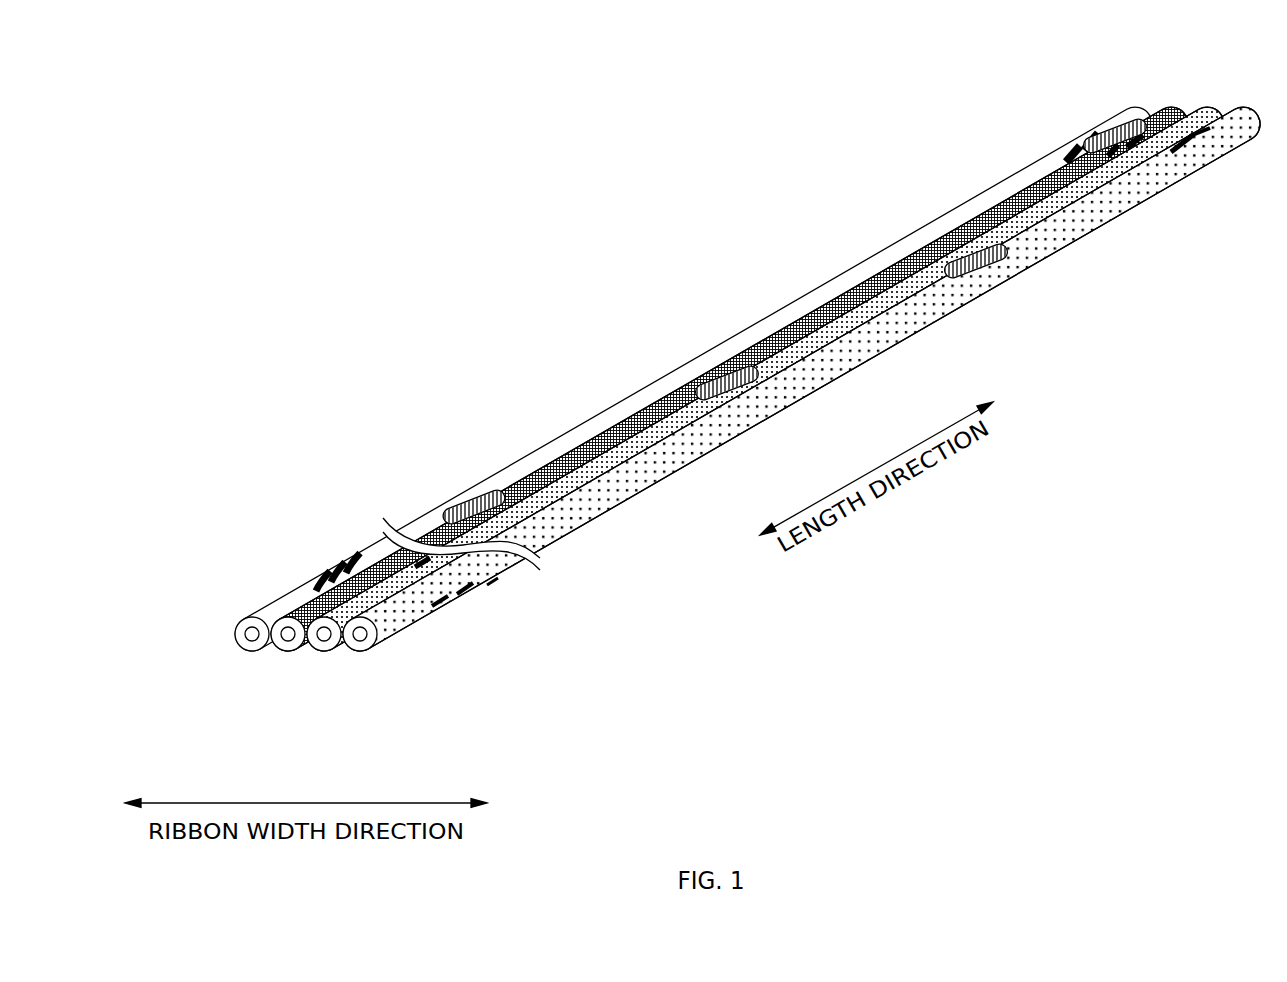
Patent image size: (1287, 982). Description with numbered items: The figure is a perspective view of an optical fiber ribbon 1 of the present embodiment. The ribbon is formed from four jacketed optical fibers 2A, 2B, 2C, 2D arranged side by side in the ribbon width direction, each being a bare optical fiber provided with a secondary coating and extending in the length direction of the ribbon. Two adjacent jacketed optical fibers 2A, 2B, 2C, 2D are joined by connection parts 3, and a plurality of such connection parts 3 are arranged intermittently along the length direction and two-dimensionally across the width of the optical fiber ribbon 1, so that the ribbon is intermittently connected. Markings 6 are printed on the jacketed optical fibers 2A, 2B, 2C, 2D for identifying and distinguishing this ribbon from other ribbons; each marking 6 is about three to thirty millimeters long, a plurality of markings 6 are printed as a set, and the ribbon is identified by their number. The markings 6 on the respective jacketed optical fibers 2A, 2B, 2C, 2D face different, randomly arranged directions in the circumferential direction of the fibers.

The optical fiber ribbon 1 is at (738, 403).
The jacketed optical fiber 2A is at (252, 652).
The jacketed optical fiber 2B is at (288, 652).
The jacketed optical fiber 2C is at (324, 652).
The jacketed optical fiber 2D is at (360, 652).
The connection part 3 is at (473, 505).
The marking 6 is at (480, 583).